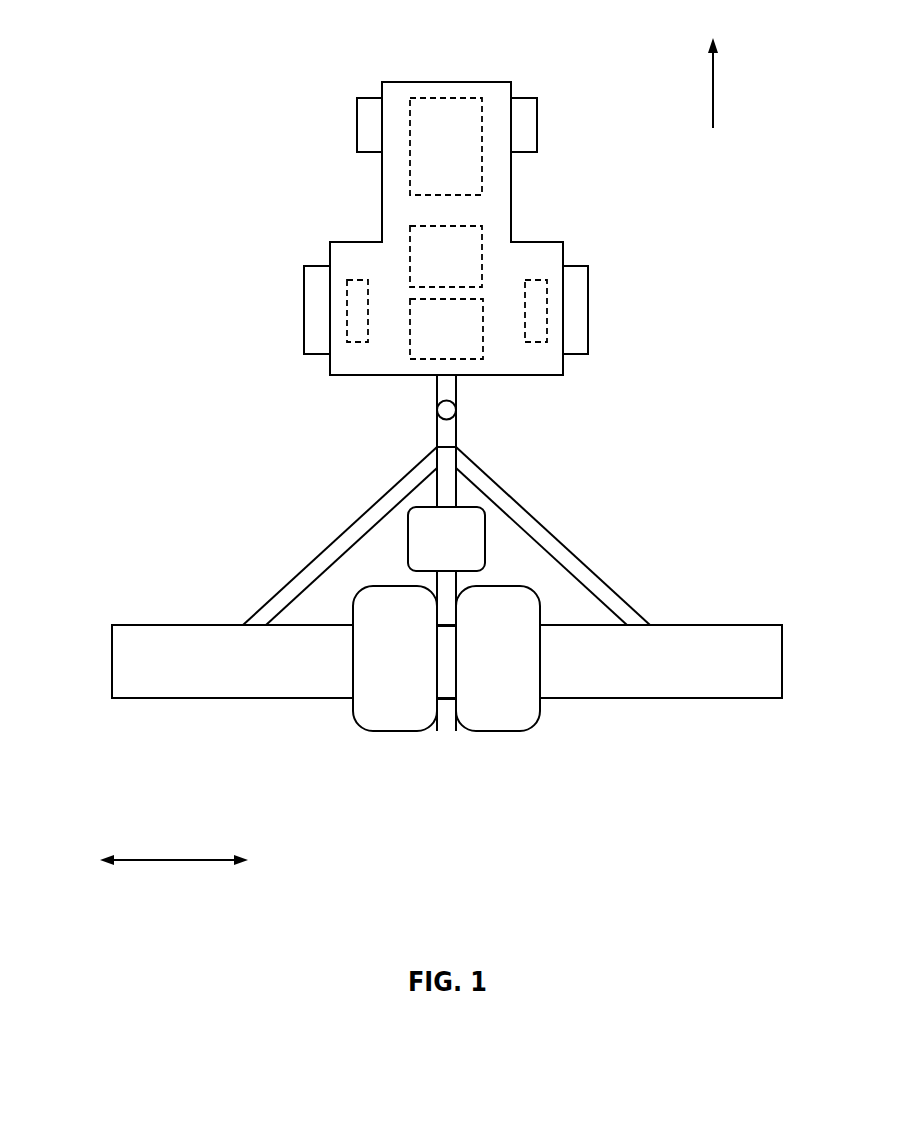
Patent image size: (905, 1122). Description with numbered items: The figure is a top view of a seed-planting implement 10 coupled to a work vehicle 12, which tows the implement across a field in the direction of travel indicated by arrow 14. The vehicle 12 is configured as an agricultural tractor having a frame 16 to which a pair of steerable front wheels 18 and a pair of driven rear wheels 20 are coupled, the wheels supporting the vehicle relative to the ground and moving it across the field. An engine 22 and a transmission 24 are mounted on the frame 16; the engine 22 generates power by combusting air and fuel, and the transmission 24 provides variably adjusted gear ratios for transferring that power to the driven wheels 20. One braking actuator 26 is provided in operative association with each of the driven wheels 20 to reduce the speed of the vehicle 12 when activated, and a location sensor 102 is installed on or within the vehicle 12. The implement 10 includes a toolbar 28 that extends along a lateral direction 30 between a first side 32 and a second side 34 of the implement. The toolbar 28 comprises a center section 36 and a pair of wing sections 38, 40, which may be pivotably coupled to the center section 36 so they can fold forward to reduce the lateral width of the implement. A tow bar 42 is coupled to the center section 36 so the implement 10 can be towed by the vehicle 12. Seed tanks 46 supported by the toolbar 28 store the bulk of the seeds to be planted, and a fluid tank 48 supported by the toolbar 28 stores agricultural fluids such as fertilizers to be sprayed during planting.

The seed-planting implement 10 is at (274, 472).
The work vehicle 12 is at (188, 122).
The direction of travel 14 is at (713, 92).
The frame 16 is at (382, 195).
The front wheels 18 is at (356, 125).
The rear wheels 20 is at (303, 308).
The engine 22 is at (435, 93).
The transmission 24 is at (485, 235).
The braking actuator 26 is at (357, 280).
The toolbar 28 is at (302, 706).
The lateral direction 30 is at (177, 863).
The first side 32 is at (92, 671).
The second side 34 is at (808, 673).
The center section 36 is at (458, 493).
The wing section 38 is at (175, 698).
The wing section 40 is at (632, 698).
The tow bar 42 is at (435, 437).
The seed tanks 46 is at (398, 733).
The fluid tank 48 is at (487, 544).
The location sensor 102 is at (484, 337).